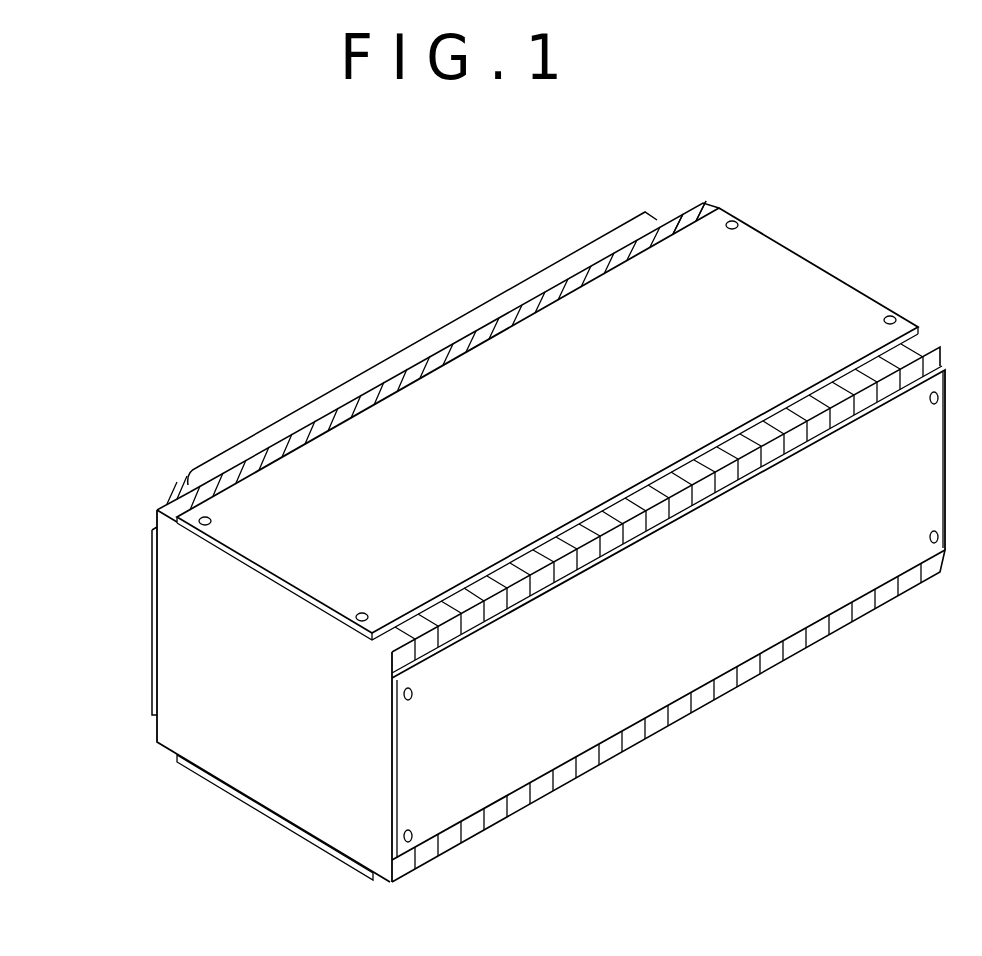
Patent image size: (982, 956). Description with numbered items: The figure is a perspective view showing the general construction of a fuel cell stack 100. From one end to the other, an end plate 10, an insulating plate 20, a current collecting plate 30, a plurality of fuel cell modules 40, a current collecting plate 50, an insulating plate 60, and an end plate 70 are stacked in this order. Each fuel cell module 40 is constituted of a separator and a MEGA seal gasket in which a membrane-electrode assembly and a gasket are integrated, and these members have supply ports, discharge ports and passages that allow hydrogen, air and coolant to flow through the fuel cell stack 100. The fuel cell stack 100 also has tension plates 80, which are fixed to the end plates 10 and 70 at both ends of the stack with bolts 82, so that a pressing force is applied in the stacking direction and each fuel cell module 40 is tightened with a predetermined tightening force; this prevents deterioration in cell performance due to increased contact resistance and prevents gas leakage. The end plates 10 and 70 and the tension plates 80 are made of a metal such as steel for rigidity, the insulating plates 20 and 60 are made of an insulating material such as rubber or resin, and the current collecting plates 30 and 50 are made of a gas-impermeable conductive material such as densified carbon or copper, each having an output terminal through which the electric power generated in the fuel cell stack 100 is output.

The fuel cell stack 100 is at (256, 209).
The end plate 10 is at (170, 496).
The insulating plate 20 is at (173, 492).
The current collecting plate 30 is at (186, 487).
The fuel cell module 40 is at (418, 341).
The current collecting plate 50 is at (653, 217).
The insulating plate 60 is at (675, 213).
The end plate 70 is at (688, 208).
The tension plate 80 is at (823, 268).
The bolt 82 is at (893, 317).